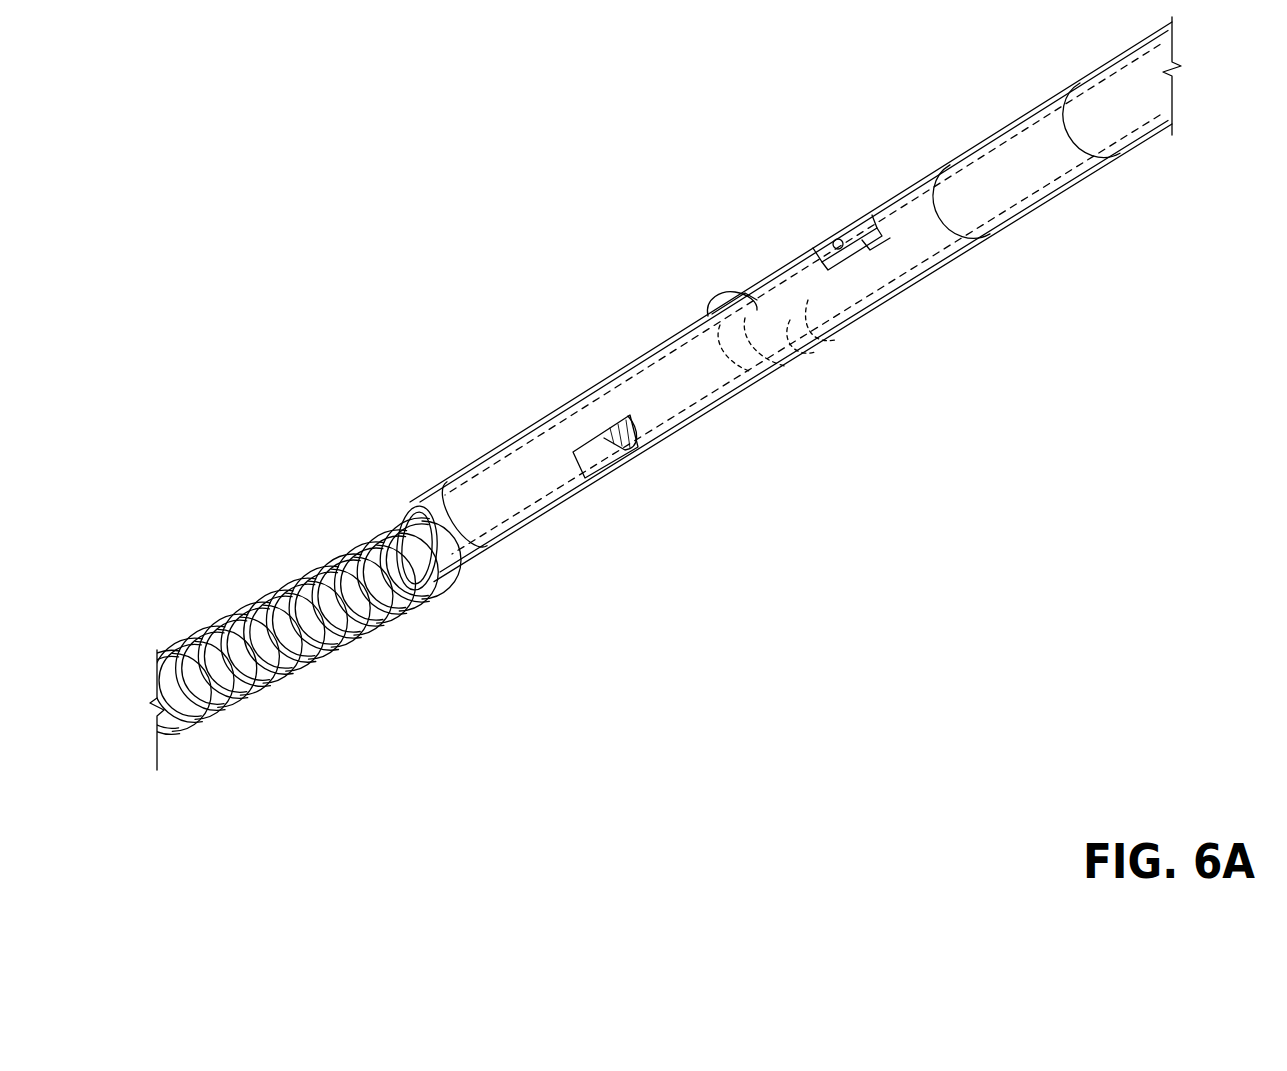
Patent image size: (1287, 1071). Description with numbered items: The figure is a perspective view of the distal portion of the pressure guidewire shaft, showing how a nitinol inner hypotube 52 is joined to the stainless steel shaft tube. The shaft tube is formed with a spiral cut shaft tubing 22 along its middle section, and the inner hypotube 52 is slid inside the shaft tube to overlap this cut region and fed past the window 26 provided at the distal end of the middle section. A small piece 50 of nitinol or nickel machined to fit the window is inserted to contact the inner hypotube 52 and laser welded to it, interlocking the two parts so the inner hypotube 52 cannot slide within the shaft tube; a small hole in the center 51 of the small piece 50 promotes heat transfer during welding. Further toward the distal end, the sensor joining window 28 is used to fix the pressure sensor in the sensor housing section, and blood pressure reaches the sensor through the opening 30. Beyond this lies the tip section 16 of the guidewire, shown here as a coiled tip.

The tip section 16 is at (269, 540).
The spiral cut shaft tubing 22 is at (1033, 110).
The window 26 is at (872, 243).
The sensor joining window 28 is at (712, 300).
The opening 30 is at (608, 460).
The small piece 50 is at (808, 244).
The small hole in the center 51 is at (838, 238).
The inner hypotube 52 is at (813, 333).